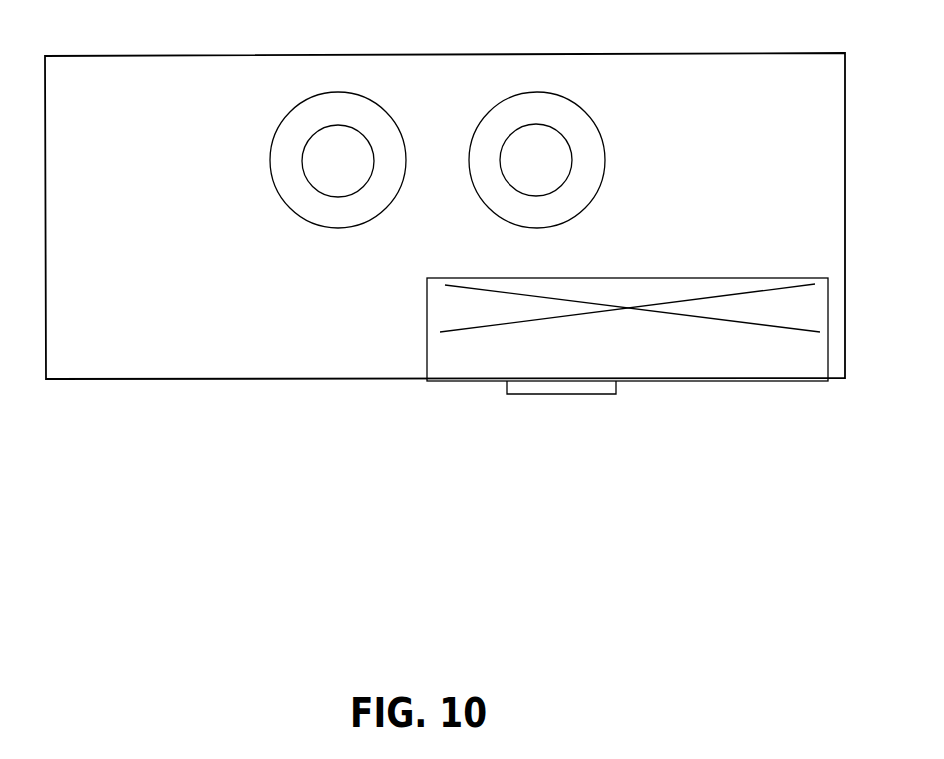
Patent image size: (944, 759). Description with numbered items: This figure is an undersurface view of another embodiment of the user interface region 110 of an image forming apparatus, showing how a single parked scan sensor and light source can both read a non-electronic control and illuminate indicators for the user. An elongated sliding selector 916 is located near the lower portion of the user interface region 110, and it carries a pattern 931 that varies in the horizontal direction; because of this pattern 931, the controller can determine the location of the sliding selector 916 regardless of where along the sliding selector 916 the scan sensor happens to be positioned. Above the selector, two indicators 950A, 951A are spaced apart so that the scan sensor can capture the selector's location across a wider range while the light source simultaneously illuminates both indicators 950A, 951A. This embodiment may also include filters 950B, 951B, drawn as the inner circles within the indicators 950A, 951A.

The user interface region 110 is at (298, 57).
The indicator 950A is at (280, 123).
The filter 950B is at (373, 152).
The indicator 951A is at (495, 107).
The filter 951B is at (572, 150).
The pattern 931 is at (681, 316).
The sliding selector 916 is at (488, 382).